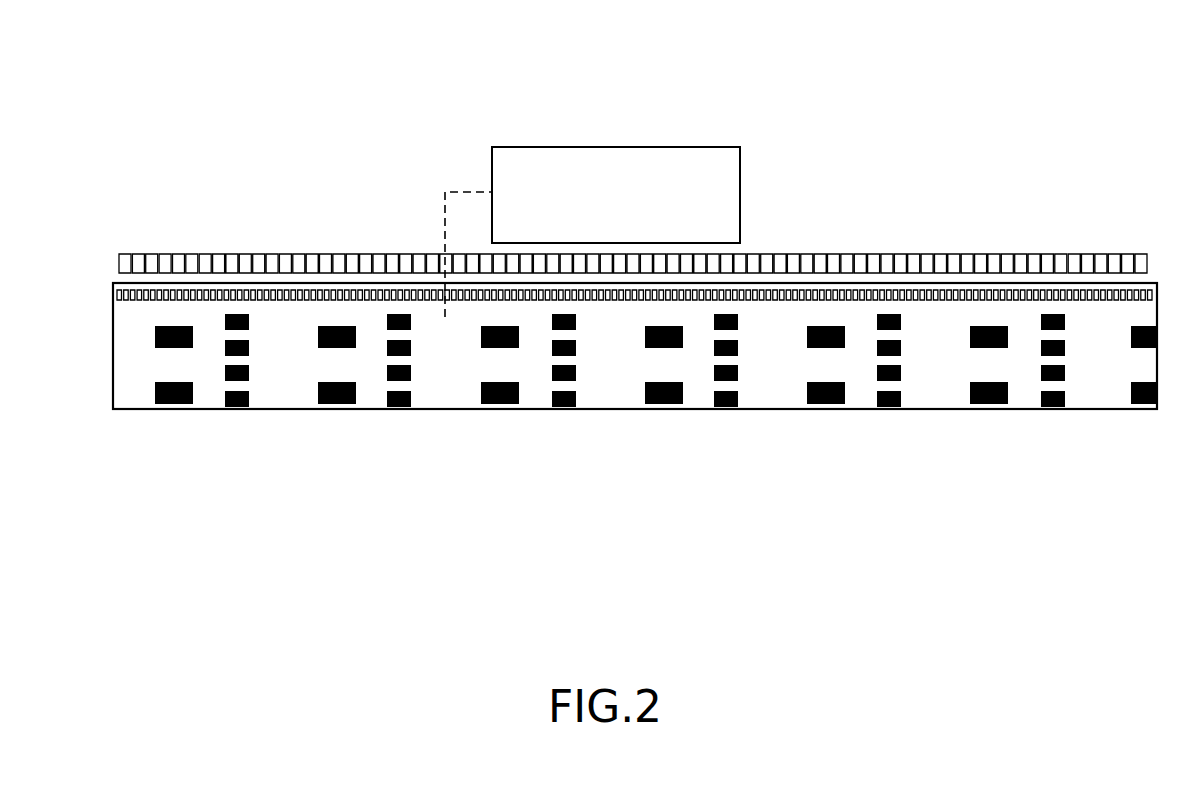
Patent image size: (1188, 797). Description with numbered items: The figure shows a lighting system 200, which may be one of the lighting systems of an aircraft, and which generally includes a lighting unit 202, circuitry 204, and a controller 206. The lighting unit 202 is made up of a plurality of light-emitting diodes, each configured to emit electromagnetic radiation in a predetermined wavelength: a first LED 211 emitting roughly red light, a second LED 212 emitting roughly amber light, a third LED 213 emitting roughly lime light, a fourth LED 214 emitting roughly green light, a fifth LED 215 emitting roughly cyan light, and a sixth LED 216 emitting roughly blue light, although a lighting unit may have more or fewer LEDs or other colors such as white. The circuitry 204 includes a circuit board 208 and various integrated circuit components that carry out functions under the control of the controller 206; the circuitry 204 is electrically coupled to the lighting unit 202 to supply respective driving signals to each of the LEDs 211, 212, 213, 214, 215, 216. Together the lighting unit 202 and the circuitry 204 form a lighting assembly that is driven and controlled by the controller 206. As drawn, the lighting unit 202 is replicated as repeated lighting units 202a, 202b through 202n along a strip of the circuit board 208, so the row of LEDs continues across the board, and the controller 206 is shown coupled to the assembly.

The lighting system 200 is at (238, 80).
The lighting unit 202 is at (138, 246).
The replicated lighting unit 202a is at (198, 250).
The replicated lighting unit 202b is at (278, 250).
The replicated lighting unit 202n is at (1148, 250).
The circuitry 204 is at (218, 420).
The controller 206 is at (632, 205).
The circuit board 208 is at (435, 372).
The first LED 211 is at (124, 264).
The second LED 212 is at (138, 266).
The third LED 213 is at (152, 266).
The fourth LED 214 is at (165, 266).
The fifth LED 215 is at (177, 266).
The sixth LED 216 is at (188, 266).